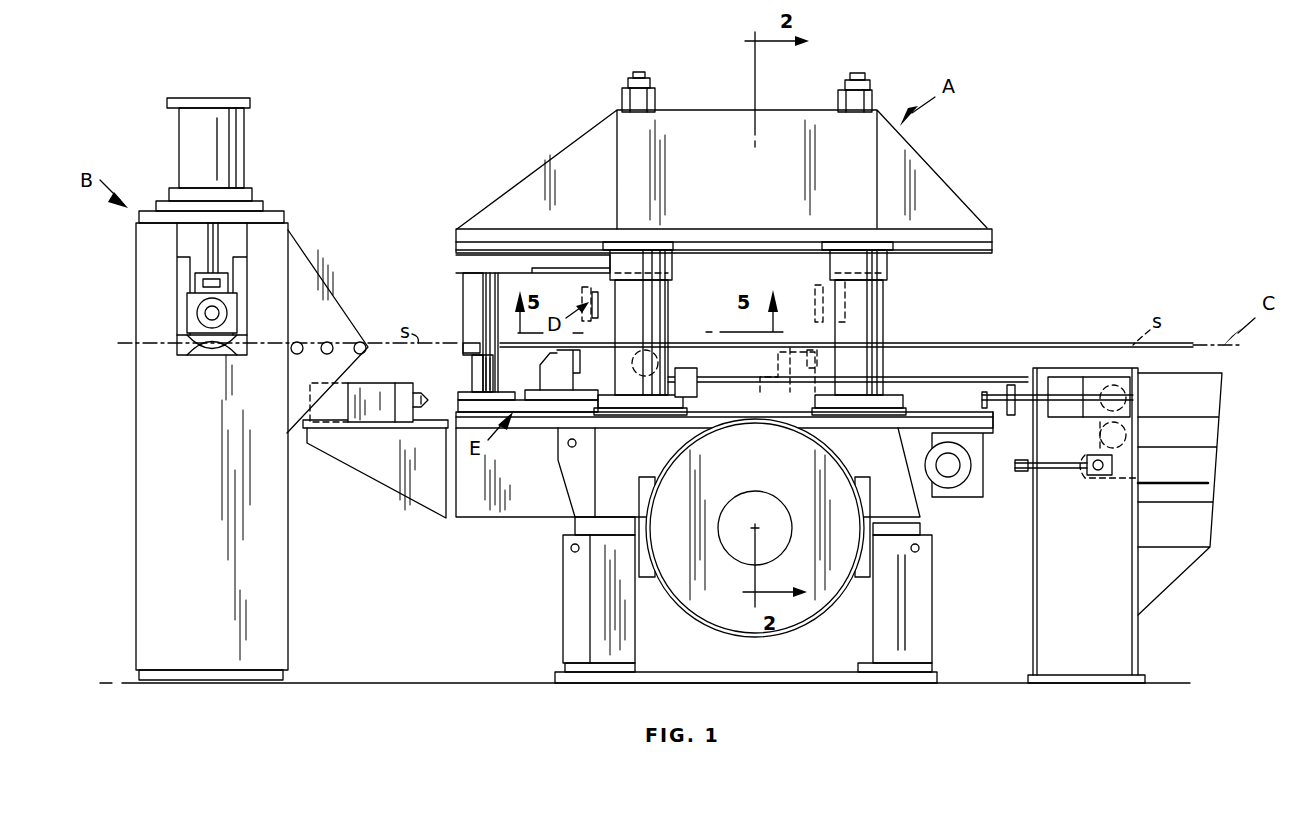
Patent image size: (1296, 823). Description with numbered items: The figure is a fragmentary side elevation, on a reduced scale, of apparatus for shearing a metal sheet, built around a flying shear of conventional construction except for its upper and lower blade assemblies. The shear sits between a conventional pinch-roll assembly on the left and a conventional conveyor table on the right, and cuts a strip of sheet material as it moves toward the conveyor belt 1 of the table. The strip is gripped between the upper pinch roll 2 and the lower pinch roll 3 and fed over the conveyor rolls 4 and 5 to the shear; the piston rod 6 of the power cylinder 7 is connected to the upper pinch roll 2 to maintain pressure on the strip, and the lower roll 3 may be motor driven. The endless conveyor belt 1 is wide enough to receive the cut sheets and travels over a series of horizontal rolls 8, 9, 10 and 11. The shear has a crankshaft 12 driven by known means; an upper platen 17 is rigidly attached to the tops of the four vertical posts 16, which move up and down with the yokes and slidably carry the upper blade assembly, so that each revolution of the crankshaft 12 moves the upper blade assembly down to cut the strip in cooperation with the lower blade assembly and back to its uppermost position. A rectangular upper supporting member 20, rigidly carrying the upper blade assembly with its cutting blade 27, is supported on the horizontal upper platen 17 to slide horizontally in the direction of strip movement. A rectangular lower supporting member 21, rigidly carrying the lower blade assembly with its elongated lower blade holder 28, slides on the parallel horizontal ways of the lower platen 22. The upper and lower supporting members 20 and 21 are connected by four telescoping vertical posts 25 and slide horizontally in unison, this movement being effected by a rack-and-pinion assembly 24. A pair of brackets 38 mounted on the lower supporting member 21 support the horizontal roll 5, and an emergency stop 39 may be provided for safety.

The conveyor belt 1 is at (944, 384).
The upper pinch roll 2 is at (190, 318).
The lower pinch roll 3 is at (210, 357).
The conveyor roll 4 is at (297, 342).
The conveyor roll 5 is at (463, 347).
The piston rod 6 is at (208, 258).
The power cylinder 7 is at (237, 166).
The horizontal roll 8 is at (632, 357).
The horizontal roll 9 is at (1135, 392).
The horizontal roll 10 is at (1103, 432).
The horizontal roll 11 is at (1100, 478).
The crankshaft 12 is at (752, 492).
The vertical posts 16 is at (638, 72).
The upper platen 17 is at (686, 122).
The upper supporting member 20 is at (467, 265).
The lower supporting member 21 is at (555, 421).
The lower platen 22 is at (680, 421).
The rack-and-pinion assembly 24 is at (970, 492).
The telescoping vertical posts 25 is at (470, 300).
The cutting blade 27 is at (582, 296).
The lower blade holder 28 is at (778, 352).
The brackets 38 is at (478, 372).
The emergency stop 39 is at (390, 422).